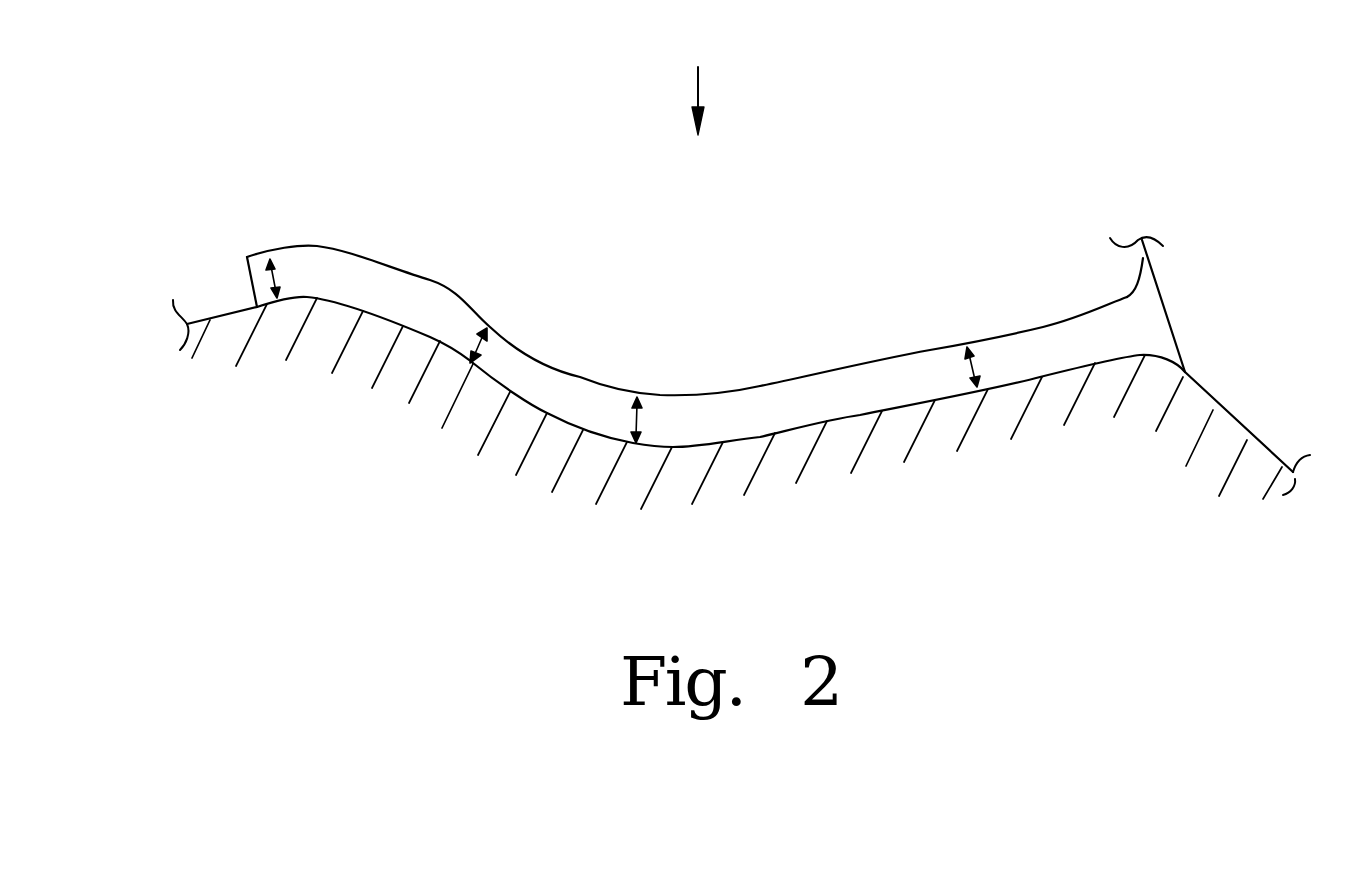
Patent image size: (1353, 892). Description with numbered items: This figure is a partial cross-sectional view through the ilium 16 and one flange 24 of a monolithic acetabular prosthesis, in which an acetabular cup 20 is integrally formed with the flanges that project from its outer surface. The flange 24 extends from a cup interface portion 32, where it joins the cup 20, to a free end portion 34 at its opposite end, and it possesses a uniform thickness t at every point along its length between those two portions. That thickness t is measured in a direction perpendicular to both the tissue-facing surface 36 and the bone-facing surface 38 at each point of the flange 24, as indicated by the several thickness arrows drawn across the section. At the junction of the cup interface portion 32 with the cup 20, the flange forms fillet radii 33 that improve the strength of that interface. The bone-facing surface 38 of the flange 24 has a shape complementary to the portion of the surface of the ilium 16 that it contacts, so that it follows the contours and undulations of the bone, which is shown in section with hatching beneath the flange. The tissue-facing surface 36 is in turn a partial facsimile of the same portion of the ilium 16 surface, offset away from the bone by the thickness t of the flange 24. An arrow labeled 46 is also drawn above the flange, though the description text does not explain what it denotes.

The ilium 16 is at (884, 527).
The acetabular cup 20 is at (1237, 349).
The flange 24 is at (693, 323).
The cup interface portion 32 is at (1087, 334).
The fillet radii 33 is at (1130, 298).
The free end portion 34 is at (260, 277).
The tissue-facing surface 36 is at (400, 259).
The bone-facing surface 38 is at (385, 325).
The direction arrow 46 is at (698, 85).